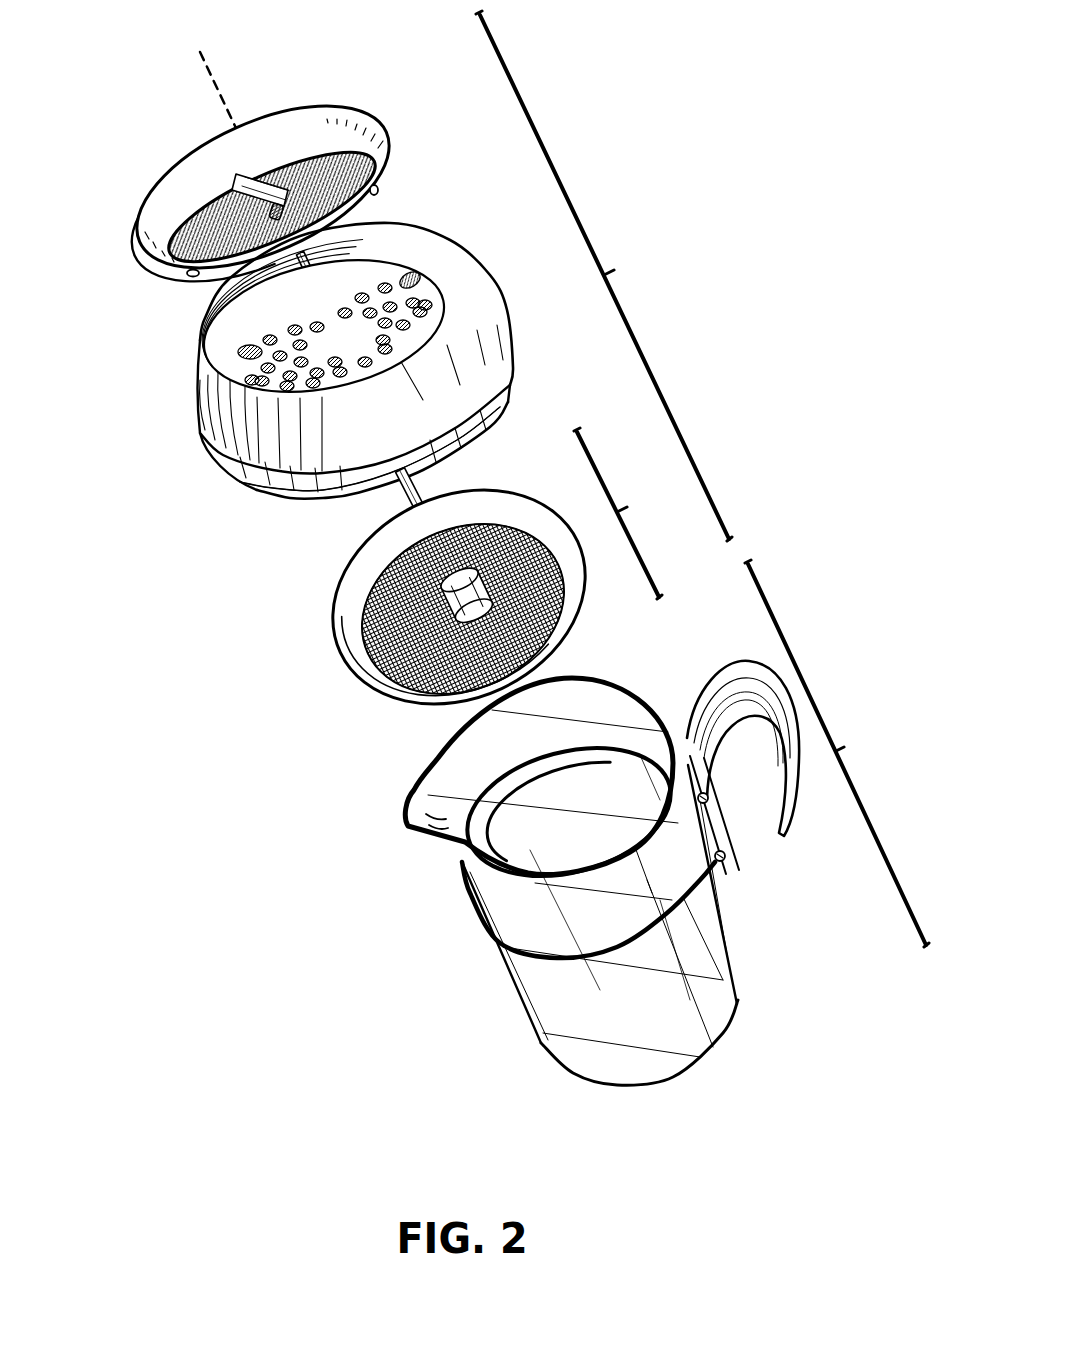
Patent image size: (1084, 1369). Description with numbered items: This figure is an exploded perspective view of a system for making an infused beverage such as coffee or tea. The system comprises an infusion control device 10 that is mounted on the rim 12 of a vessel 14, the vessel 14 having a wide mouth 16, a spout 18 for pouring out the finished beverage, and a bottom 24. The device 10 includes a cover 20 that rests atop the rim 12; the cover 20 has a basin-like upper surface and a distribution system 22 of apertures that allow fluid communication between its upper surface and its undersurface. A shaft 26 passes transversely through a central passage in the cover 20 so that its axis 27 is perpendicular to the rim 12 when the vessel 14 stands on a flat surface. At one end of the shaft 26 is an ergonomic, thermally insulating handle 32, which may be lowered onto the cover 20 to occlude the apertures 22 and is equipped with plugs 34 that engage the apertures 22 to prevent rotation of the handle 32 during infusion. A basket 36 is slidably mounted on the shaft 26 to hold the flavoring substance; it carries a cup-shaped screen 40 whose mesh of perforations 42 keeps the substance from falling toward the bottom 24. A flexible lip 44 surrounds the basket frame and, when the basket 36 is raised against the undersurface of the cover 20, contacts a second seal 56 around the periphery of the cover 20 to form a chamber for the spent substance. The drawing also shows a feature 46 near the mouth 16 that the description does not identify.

The infusion control device 10 is at (604, 276).
The rim 12 is at (617, 681).
The vessel 14 is at (837, 753).
The mouth 16 is at (483, 763).
The spout 18 is at (423, 827).
The cover 20 is at (250, 438).
The distribution system 22 is at (408, 272).
The bottom 24 is at (620, 1067).
The shaft 26 is at (418, 494).
The axis 27 is at (222, 90).
The handle 32 is at (312, 120).
The plugs 34 is at (193, 282).
The basket 36 is at (618, 513).
The screen 40 is at (392, 628).
The perforations 42 is at (443, 609).
The lip 44 is at (363, 655).
The inner ledge 46 is at (503, 893).
The second seal 56 is at (480, 416).